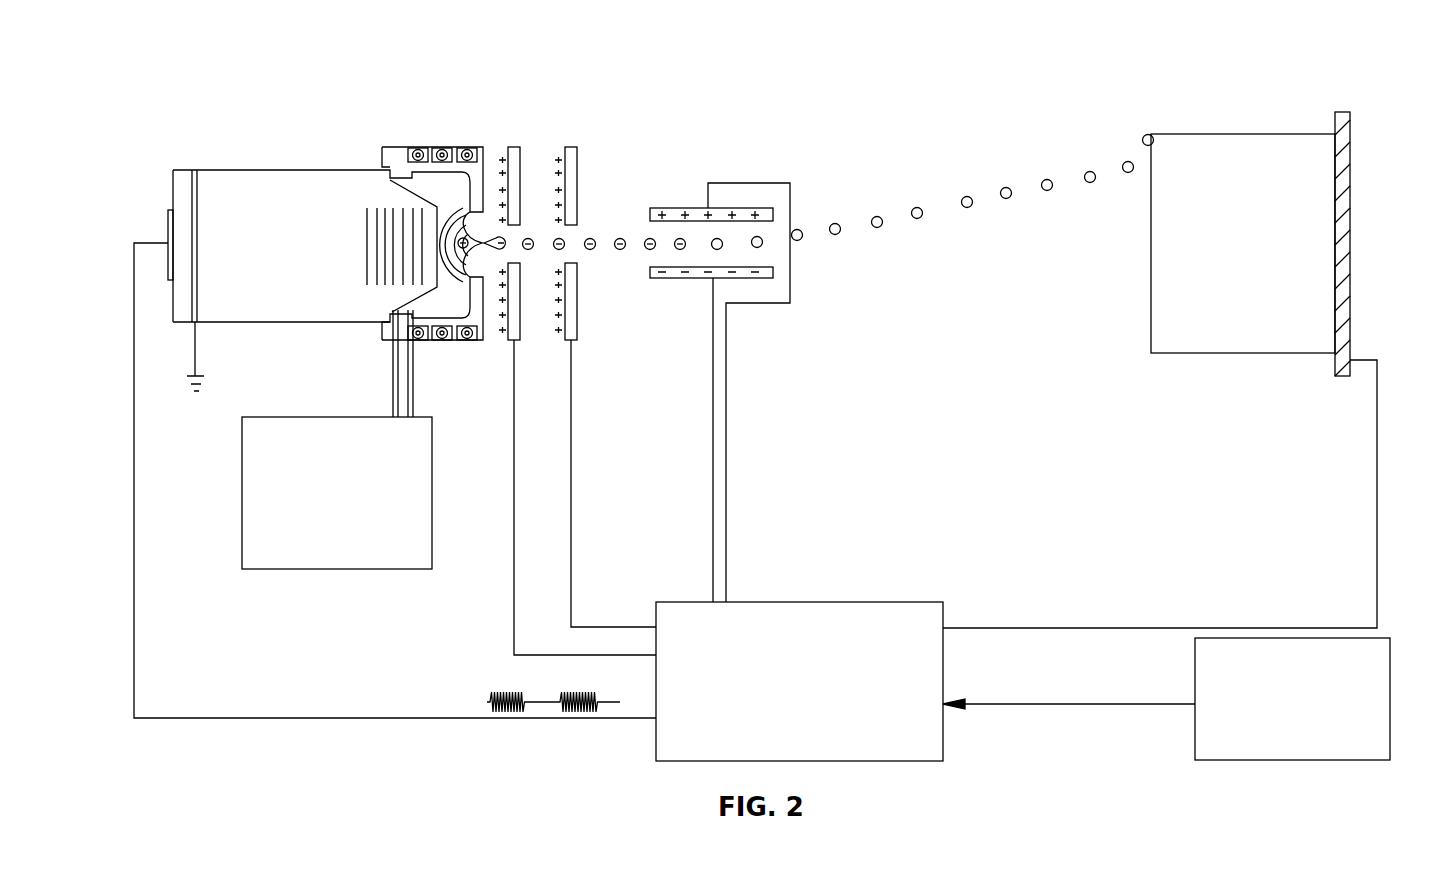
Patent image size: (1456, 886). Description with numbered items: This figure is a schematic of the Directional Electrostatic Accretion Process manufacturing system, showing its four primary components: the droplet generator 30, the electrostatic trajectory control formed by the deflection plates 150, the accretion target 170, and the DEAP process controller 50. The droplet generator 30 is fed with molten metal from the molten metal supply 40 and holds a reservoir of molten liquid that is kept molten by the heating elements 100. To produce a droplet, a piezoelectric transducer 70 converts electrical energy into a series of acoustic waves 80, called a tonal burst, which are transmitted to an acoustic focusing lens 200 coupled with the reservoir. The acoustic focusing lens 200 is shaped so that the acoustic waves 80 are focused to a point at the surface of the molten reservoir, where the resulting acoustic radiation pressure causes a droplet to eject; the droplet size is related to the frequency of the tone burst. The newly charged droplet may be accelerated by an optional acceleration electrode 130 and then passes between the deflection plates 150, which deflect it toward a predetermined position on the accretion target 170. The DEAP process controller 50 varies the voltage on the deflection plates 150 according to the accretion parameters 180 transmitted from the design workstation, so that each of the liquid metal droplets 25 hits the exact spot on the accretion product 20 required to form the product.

The accretion product 20 is at (1203, 134).
The liquid metal droplets 25 is at (917, 200).
The droplet generator 30 is at (288, 172).
The molten metal supply 40 is at (363, 573).
The DEAP control 50 is at (836, 602).
The piezoelectric transducer 70 is at (173, 190).
The acoustic waves 80 is at (373, 245).
The heating elements 100 is at (448, 147).
The acceleration electrode 130 is at (575, 147).
The deflection plates 150 is at (665, 208).
The accretion target 170 is at (1343, 112).
The accretion parameters 180 is at (1053, 701).
The acoustic focusing lens 200 is at (474, 261).